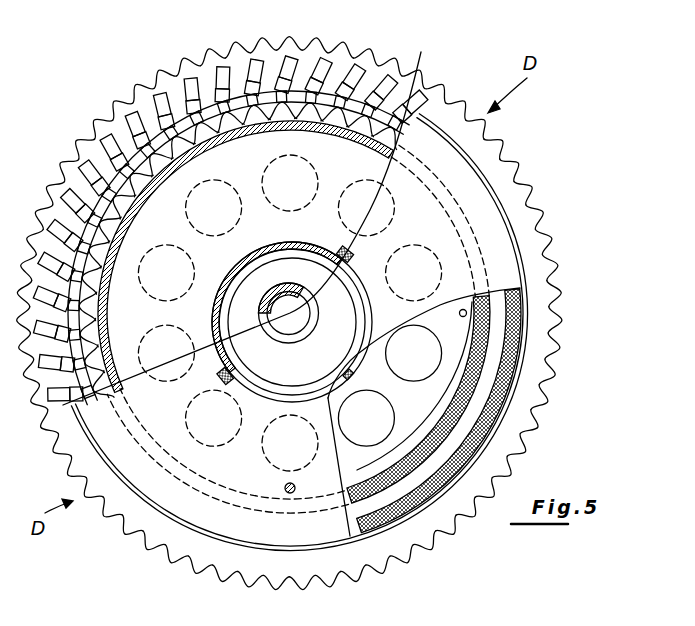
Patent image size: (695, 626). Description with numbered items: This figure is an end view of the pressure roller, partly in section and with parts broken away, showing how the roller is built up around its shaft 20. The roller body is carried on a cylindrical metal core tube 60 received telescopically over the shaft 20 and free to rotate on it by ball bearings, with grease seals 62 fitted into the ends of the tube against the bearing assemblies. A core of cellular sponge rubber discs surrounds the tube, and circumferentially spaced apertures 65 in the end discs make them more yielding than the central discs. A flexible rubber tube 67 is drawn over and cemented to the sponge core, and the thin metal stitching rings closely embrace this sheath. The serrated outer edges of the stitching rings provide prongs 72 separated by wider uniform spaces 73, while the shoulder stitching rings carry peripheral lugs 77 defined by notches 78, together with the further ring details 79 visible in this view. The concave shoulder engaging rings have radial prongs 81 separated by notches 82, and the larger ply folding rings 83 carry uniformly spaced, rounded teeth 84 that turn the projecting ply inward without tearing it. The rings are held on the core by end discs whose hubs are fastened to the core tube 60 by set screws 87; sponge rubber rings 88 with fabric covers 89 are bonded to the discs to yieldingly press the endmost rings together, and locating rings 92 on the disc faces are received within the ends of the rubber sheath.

The shaft 20 is at (305, 318).
The core tube 60 is at (267, 252).
The grease seals 62 is at (275, 368).
The apertures 65 is at (431, 385).
The rubber tube 67 is at (468, 381).
The prongs 72 is at (100, 253).
The spaces 73 is at (253, 120).
The lugs 77 is at (140, 193).
The notches 78 is at (108, 250).
The pawl teeth 79 is at (152, 157).
The prongs 81 is at (249, 217).
The notches 82 is at (371, 64).
The folding rings 83 is at (522, 238).
The teeth 84 is at (508, 156).
The set screws 87 is at (193, 388).
The sponge rubber rings 88 is at (498, 351).
The fabric covers 89 is at (498, 426).
The locating rings 92 is at (388, 460).